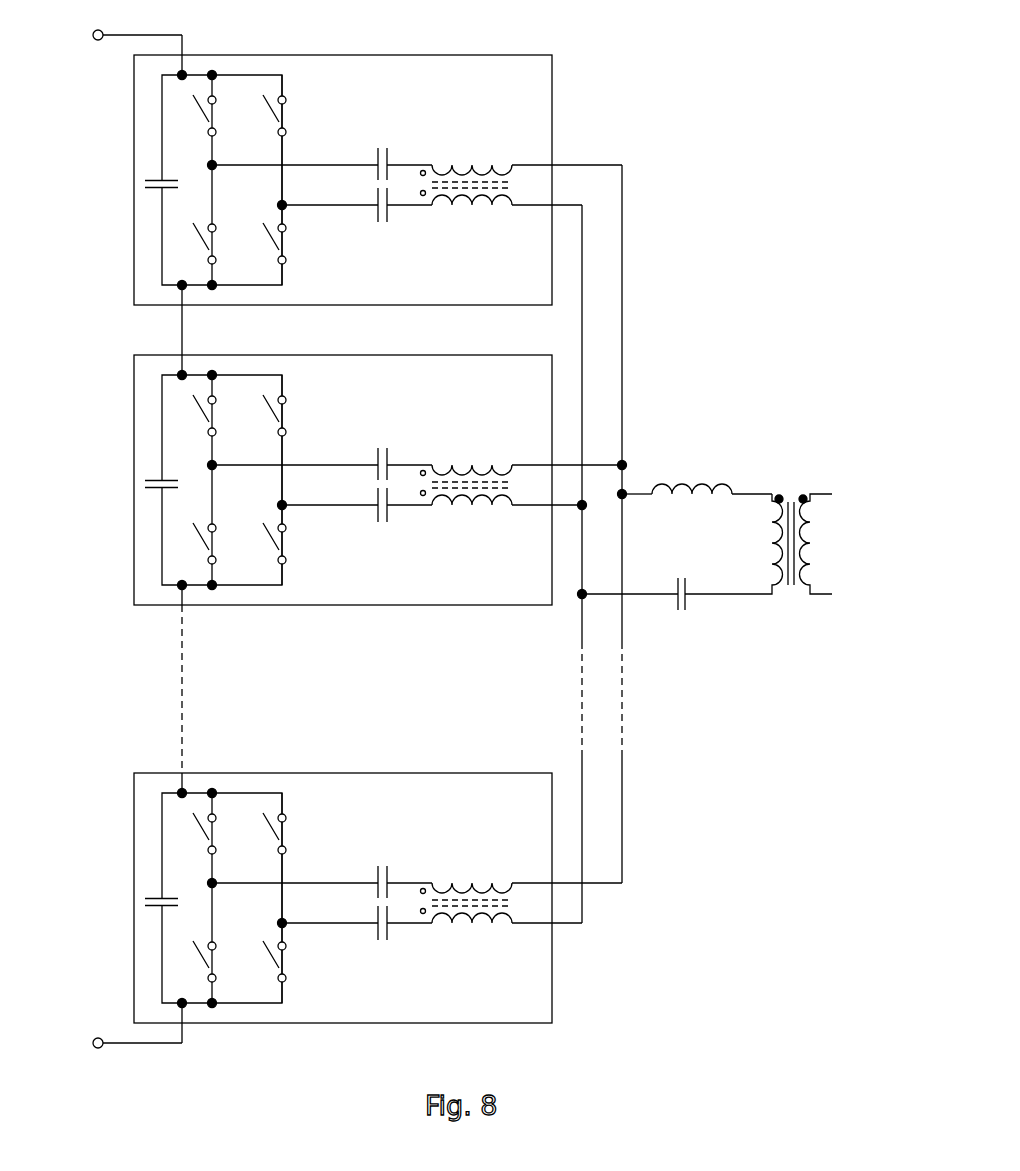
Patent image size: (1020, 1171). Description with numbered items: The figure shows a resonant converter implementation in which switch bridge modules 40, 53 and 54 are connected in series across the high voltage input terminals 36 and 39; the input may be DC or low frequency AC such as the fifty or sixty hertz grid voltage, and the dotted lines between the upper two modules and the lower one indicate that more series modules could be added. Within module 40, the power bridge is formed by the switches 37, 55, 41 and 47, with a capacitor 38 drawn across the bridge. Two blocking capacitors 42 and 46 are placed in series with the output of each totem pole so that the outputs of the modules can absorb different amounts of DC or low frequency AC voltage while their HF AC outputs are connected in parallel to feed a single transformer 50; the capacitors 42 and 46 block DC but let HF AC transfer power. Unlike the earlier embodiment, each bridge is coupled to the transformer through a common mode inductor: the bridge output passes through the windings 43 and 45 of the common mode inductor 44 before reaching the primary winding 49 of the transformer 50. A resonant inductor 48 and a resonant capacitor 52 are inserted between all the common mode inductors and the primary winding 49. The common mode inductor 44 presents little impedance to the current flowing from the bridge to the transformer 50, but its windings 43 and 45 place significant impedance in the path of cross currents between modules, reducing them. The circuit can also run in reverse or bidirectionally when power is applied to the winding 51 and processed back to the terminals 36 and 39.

The high voltage input terminal 36 is at (117, 43).
The switch 37 is at (193, 112).
The DC link capacitor 38 is at (150, 197).
The high voltage input terminal 39 is at (117, 1035).
The switch bridge module 40 is at (379, 168).
The switch 41 is at (290, 115).
The blocking capacitor 42 is at (392, 153).
The winding of the common mode inductor 43 is at (482, 165).
The common mode inductor 44 is at (520, 183).
The winding of the common mode inductor 45 is at (480, 205).
The blocking capacitor 46 is at (390, 213).
The switch 47 is at (290, 258).
The resonant inductor 48 is at (668, 477).
The primary winding 49 is at (767, 535).
The transformer 50 is at (789, 487).
The winding 51 is at (822, 530).
The resonant capacitor 52 is at (690, 607).
The switch bridge module 53 is at (432, 607).
The switch bridge module 54 is at (393, 770).
The switch 55 is at (193, 237).